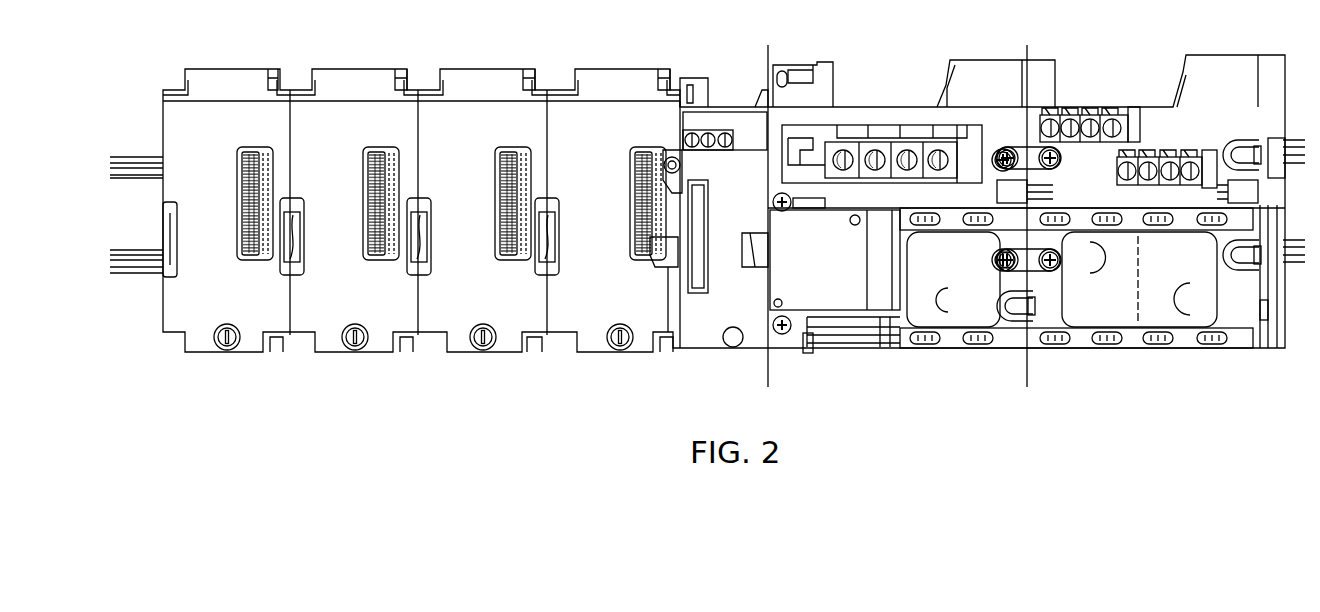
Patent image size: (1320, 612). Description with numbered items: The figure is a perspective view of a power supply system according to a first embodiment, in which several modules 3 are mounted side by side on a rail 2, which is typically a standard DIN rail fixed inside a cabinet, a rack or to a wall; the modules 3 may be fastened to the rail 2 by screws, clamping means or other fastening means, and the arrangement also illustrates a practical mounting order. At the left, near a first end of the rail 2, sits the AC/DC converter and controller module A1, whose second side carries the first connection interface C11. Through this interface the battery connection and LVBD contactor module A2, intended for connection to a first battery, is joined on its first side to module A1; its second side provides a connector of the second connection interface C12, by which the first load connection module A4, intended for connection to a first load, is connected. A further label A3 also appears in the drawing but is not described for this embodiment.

The rail 2 is at (151, 238).
The modules 3 is at (495, 395).
The AC/DC converter and controller module A1 is at (492, 112).
The battery connection and LVBD contactor module A2 is at (890, 132).
The module section A3 is at (1026, 251).
The first load connection module A4 is at (1165, 123).
The first connection interface C11 is at (768, 199).
The second connection interface C12 is at (1026, 199).